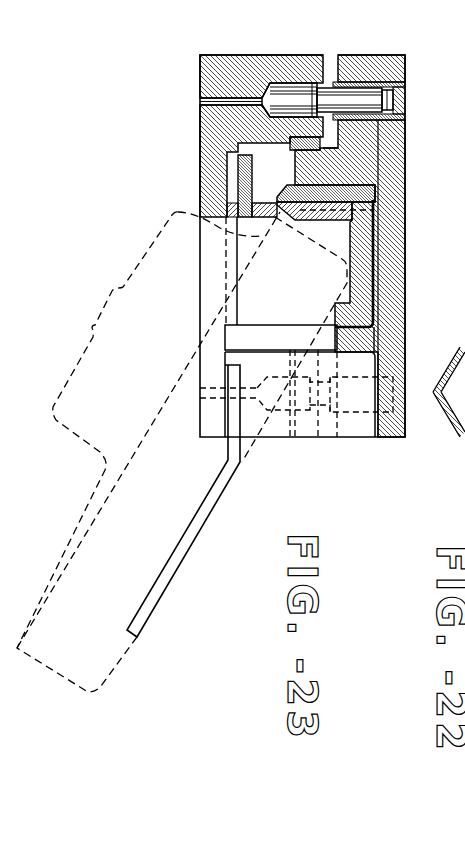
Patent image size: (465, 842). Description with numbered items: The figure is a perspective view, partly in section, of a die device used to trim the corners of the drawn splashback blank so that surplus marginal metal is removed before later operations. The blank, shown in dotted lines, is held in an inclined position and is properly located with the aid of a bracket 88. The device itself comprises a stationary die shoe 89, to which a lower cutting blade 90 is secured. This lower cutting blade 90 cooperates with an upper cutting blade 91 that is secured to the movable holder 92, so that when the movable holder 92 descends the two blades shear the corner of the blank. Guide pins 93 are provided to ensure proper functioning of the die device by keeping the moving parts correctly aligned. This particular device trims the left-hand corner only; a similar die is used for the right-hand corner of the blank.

The bracket 88 is at (217, 490).
The stationary die shoe 89 is at (213, 75).
The lower cutting blade 90 is at (258, 203).
The upper cutting blade 91 is at (373, 192).
The movable holder 92 is at (402, 150).
The guide pins 93 is at (393, 97).